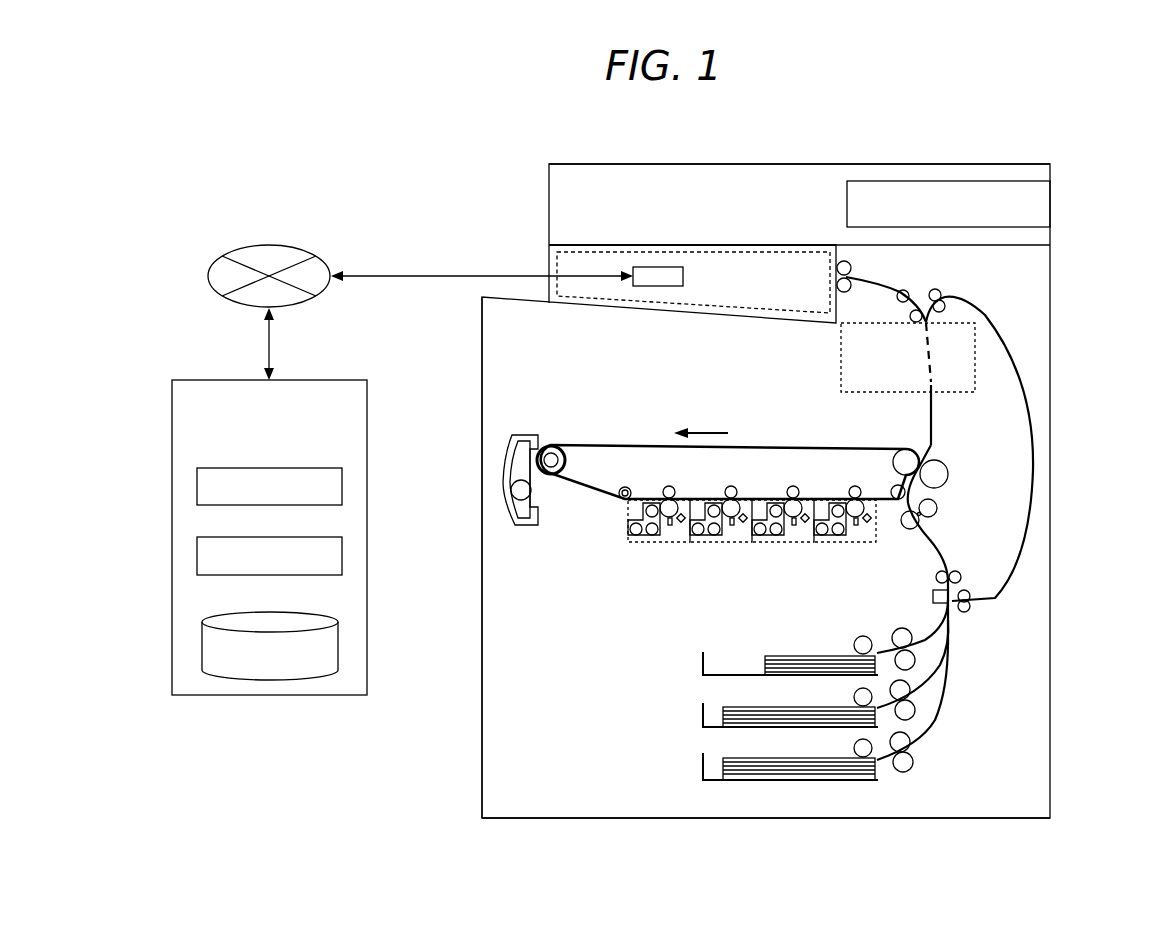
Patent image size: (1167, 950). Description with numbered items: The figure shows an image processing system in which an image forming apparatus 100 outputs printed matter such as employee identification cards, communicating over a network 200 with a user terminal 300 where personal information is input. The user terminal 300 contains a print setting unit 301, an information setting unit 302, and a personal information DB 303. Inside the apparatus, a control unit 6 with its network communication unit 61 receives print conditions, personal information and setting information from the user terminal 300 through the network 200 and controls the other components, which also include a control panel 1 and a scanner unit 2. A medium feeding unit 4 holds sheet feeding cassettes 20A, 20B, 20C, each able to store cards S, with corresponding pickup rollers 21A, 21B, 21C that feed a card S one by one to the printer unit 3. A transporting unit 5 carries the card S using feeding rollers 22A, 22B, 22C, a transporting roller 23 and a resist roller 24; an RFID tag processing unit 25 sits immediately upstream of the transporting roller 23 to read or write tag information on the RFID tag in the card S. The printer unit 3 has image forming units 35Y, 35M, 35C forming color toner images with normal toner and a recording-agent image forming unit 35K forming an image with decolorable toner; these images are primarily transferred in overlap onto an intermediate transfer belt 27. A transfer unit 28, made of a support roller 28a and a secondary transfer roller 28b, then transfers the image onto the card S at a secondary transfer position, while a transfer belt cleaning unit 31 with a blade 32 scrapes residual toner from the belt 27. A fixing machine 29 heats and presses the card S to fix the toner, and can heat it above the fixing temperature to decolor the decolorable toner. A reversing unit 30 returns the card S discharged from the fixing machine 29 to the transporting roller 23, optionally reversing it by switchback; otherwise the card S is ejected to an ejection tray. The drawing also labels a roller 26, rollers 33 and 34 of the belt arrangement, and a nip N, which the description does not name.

The image forming apparatus 100 is at (1124, 175).
The control panel 1 is at (935, 190).
The scanner unit 2 is at (705, 190).
The printer unit 3 is at (495, 402).
The medium feeding unit 4 is at (528, 694).
The transporting unit 5 is at (990, 563).
The control unit 6 is at (556, 263).
The network communication unit 61 is at (684, 276).
The network 200 is at (284, 248).
The user terminal 300 is at (318, 380).
The print setting unit 301 is at (290, 466).
The information setting unit 302 is at (290, 536).
The personal information DB 303 is at (290, 611).
The sheet feeding cassette 20A is at (701, 667).
The sheet feeding cassette 20B is at (701, 718).
The sheet feeding cassette 20C is at (701, 771).
The pickup roller 21A is at (853, 645).
The pickup roller 21B is at (853, 697).
The pickup roller 21C is at (853, 748).
The feeding roller 22A is at (908, 652).
The feeding roller 22B is at (910, 690).
The feeding roller 22C is at (912, 744).
The transporting roller 23 is at (938, 572).
The resist roller 24 is at (922, 514).
The RFID tag processing unit 25 is at (948, 611).
The secondary transfer roller 26 is at (893, 488).
The intermediate transfer belt 27 is at (774, 444).
The transfer unit 28 is at (913, 455).
The support roller 28a is at (906, 449).
The secondary transfer roller 28b is at (942, 480).
The fixing machine 29 is at (841, 356).
The reversing unit 30 is at (1038, 395).
The transfer belt cleaning unit 31 is at (535, 426).
The blade 32 is at (540, 495).
The drive roller 33 is at (568, 458).
The tension roller 34 is at (625, 486).
The image forming unit 35Y is at (648, 545).
The image forming unit 35M is at (710, 545).
The image forming unit 35C is at (772, 545).
The recording-agent image forming unit 35K is at (834, 545).
The nip portion N is at (933, 522).
The card S is at (773, 656).